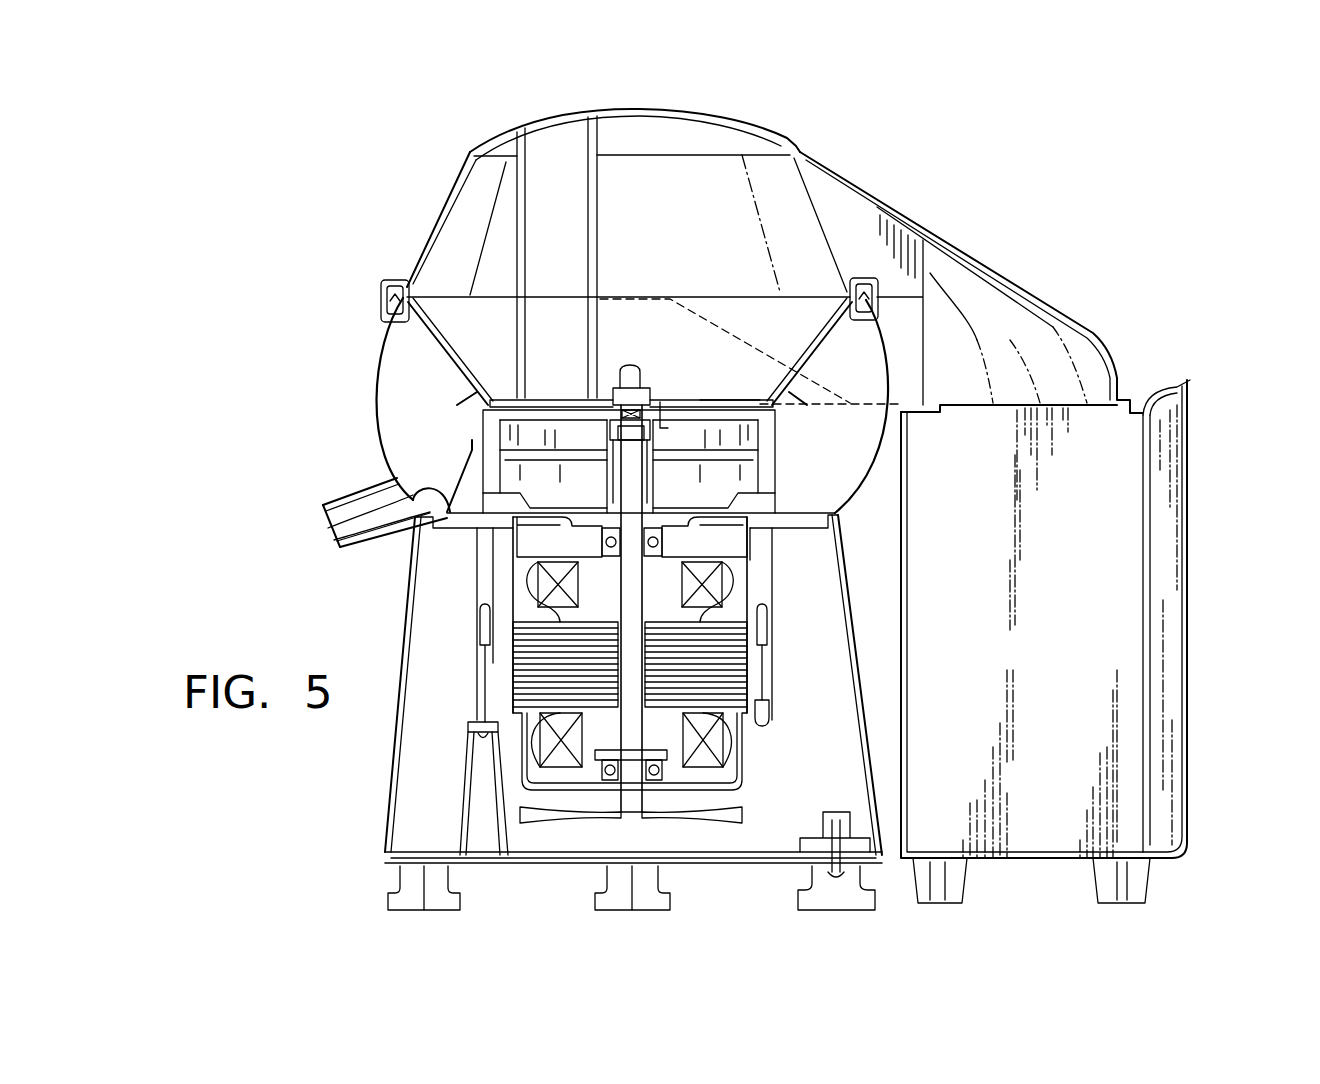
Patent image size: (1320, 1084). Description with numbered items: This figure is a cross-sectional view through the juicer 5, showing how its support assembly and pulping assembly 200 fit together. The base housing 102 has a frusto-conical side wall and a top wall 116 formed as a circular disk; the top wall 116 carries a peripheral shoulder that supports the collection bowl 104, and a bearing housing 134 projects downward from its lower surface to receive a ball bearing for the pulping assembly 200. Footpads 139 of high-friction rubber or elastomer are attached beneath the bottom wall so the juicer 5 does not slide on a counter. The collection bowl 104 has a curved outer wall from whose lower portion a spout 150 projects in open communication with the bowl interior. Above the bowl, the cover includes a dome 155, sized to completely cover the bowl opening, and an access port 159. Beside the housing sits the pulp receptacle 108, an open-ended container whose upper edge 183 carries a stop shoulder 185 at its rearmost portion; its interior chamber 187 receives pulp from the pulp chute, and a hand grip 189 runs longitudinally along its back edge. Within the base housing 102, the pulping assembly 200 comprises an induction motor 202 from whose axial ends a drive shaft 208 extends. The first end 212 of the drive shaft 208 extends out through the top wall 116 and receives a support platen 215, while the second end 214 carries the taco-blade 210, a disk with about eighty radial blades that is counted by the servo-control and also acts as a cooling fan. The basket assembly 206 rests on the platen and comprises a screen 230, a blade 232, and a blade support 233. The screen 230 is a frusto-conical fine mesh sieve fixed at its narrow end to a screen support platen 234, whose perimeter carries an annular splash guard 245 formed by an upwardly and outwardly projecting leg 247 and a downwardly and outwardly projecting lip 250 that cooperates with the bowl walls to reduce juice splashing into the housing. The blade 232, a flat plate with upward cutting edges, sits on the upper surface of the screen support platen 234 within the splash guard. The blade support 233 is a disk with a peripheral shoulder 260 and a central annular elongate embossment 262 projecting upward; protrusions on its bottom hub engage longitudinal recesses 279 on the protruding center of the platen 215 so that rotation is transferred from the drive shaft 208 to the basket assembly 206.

The juicer 5 is at (1058, 182).
The base housing 102 is at (380, 750).
The collection bowl 104 is at (365, 378).
The pulp receptacle 108 is at (1160, 647).
The top wall 116 is at (337, 530).
The bearing housing 134 is at (605, 707).
The footpads 139 is at (427, 888).
The spout 150 is at (332, 503).
The dome 155 is at (780, 143).
The access port 159 is at (581, 182).
The upper edge 183 is at (1183, 377).
The stop shoulder 185 is at (927, 403).
The interior chamber 187 is at (1115, 697).
The hand grip 189 is at (1167, 510).
The pulping assembly 200 is at (495, 603).
The induction motor 202 is at (759, 754).
The basket assembly 206 is at (471, 336).
The drive shaft 208 is at (660, 807).
The taco-blade 210 is at (505, 813).
The first end 212 is at (577, 525).
The second end 214 is at (623, 803).
The support platen 215 is at (793, 526).
The screen 230 is at (848, 395).
The blade 232 is at (668, 407).
The blade support 233 is at (707, 393).
The screen support platen 234 is at (487, 428).
The annular splash guard 245 is at (440, 388).
The leg 247 is at (488, 430).
The lip 250 is at (797, 392).
The peripheral shoulder 260 is at (777, 418).
The central annular elongate embossment 262 is at (612, 420).
The recesses 279 is at (612, 444).